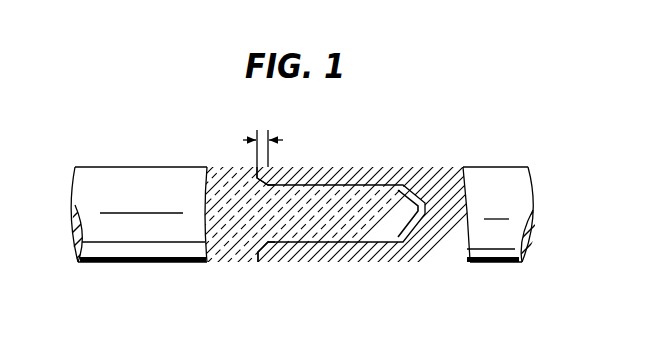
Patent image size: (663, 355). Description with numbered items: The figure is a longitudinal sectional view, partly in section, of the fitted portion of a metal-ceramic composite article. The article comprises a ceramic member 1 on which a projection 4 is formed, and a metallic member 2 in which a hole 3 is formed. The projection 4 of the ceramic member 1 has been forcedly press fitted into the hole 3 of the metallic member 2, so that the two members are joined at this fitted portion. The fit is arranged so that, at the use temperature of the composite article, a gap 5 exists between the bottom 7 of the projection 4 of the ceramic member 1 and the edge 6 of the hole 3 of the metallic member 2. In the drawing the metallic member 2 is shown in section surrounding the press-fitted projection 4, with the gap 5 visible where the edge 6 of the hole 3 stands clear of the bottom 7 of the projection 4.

The ceramic member 1 is at (140, 178).
The metallic member 2 is at (495, 263).
The hole 3 is at (421, 205).
The projection 4 is at (352, 190).
The gap 5 is at (263, 136).
The edge of the hole 6 is at (261, 263).
The bottom of the projection 7 is at (272, 168).